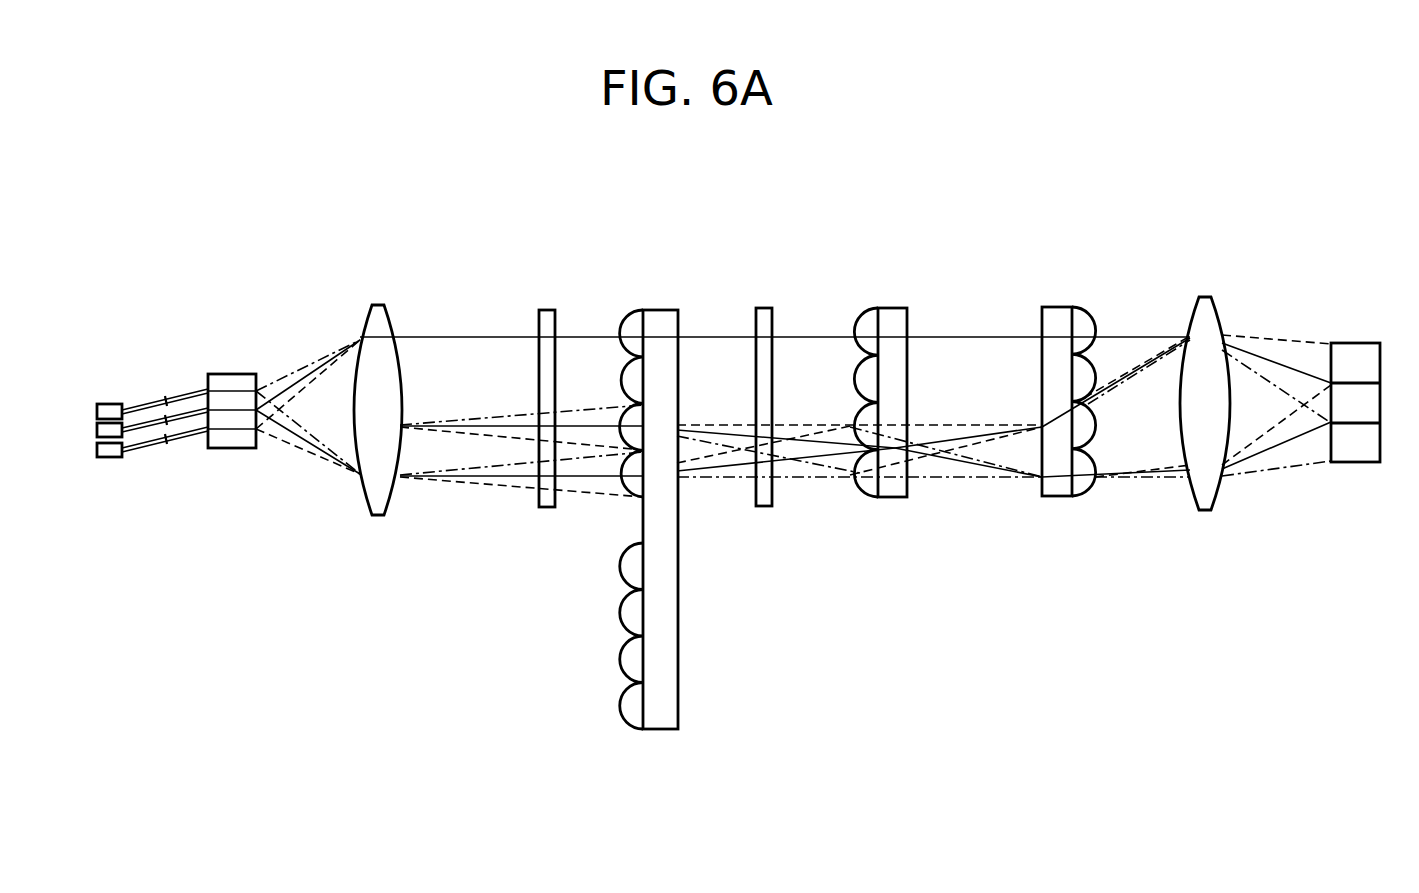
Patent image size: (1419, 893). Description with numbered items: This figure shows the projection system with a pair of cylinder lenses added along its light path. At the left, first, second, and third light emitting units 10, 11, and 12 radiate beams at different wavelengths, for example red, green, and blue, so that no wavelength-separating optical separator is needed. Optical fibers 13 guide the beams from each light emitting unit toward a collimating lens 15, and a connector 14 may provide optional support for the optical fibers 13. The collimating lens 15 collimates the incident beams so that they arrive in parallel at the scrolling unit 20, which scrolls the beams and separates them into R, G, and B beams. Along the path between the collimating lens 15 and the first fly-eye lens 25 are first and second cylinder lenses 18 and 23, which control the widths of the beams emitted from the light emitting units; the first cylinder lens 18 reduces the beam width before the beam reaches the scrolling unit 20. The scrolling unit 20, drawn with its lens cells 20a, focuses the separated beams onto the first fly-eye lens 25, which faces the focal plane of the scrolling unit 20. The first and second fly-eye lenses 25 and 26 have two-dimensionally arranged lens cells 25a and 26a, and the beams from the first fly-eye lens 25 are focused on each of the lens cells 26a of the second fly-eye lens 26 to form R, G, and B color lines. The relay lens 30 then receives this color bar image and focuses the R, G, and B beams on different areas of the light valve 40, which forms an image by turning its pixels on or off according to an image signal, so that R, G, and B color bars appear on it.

The first light emitting unit 10 is at (97, 411).
The second light emitting unit 11 is at (97, 431).
The third light emitting unit 12 is at (97, 451).
The optical fibers 13 is at (184, 392).
The connector 14 is at (232, 374).
The collimating lens 15 is at (377, 305).
The first cylinder lens 18 is at (546, 310).
The scrolling unit 20 is at (622, 486).
The lens cell of first fly-eye lens array 20a is at (632, 328).
The second cylinder lens 23 is at (765, 308).
The first fly-eye lens 25 is at (853, 370).
The lens cells of first fly-eye lens 25a is at (864, 330).
The second fly-eye lens 26 is at (1096, 369).
The lens cells of second fly-eye lens 26a is at (1085, 325).
The relay lens 30 is at (1205, 297).
The light valve 40 is at (1355, 343).